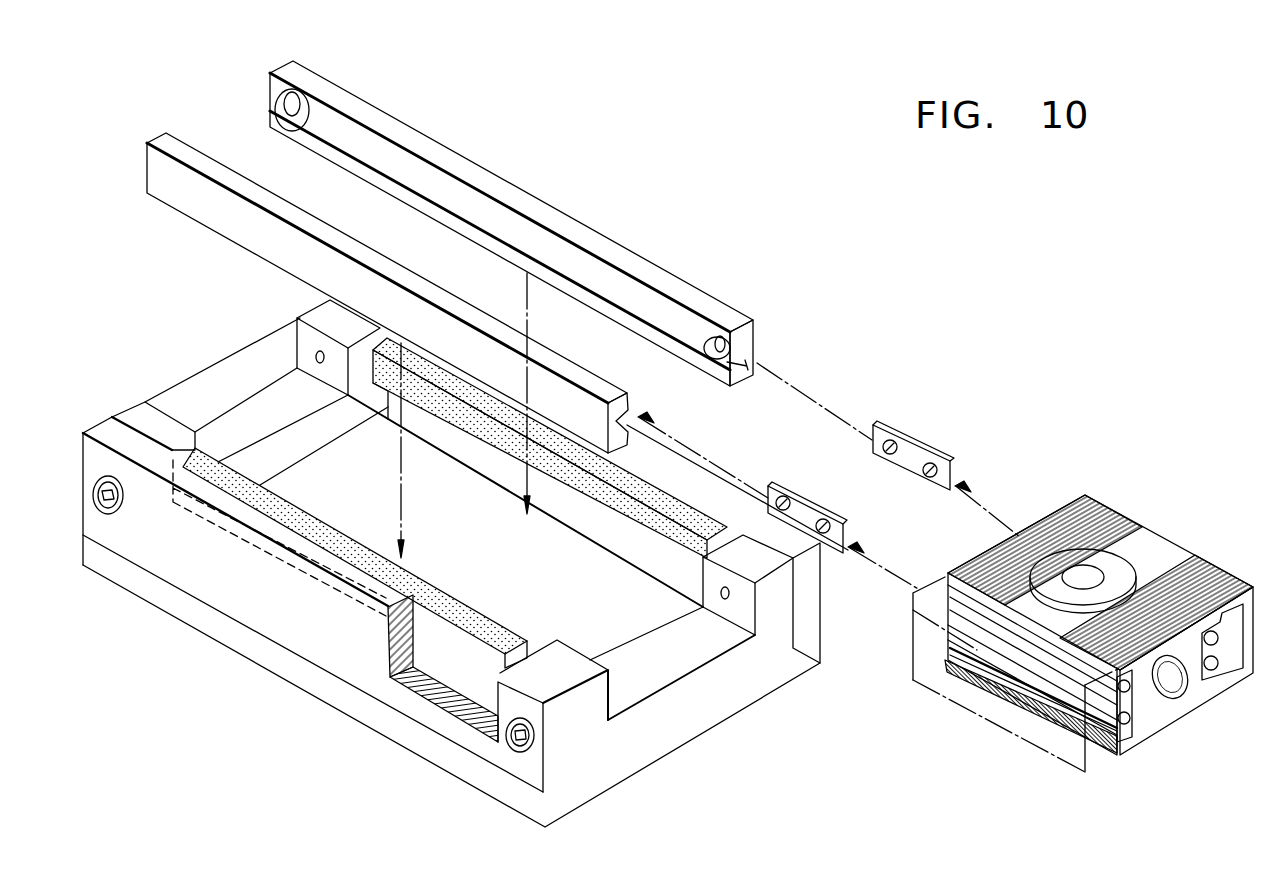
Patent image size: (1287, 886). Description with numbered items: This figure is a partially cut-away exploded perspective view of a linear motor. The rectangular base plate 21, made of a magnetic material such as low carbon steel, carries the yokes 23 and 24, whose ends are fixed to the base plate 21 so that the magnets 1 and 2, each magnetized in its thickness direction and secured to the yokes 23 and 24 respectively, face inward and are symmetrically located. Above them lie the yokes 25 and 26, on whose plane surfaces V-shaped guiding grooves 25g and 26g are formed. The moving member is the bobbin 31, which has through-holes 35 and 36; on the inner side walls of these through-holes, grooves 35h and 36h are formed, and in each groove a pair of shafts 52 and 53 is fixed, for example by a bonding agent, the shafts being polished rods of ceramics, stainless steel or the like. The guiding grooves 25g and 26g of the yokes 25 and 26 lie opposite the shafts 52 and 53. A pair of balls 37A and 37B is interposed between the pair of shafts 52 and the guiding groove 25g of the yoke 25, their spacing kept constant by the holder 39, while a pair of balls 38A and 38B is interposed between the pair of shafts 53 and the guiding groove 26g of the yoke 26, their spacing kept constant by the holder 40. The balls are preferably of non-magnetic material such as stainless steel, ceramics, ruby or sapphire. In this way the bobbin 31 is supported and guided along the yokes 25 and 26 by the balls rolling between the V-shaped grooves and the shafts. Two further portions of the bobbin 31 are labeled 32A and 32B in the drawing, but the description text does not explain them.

The magnet 1 is at (437, 640).
The magnet 2 is at (661, 538).
The rectangular base plate 21 is at (470, 775).
The yoke 23 is at (293, 640).
The yoke 24 is at (655, 452).
The yoke 25 is at (182, 205).
The guiding groove 25g is at (630, 413).
The yoke 26 is at (460, 160).
The guiding groove 26g is at (697, 345).
The bobbin 31 is at (1153, 555).
The coil 32A is at (1072, 513).
The coil 32B is at (1213, 570).
The through-hole 35 is at (1043, 718).
The groove 35h is at (1133, 700).
The through-hole 36 is at (1257, 603).
The groove 36h is at (1220, 667).
The ball 37A is at (785, 502).
The ball 37B is at (840, 527).
The ball 38A is at (884, 443).
The ball 38B is at (952, 468).
The holder 39 is at (817, 507).
The holder 40 is at (923, 440).
The shaft 52 is at (1130, 688).
The shaft 53 is at (1215, 637).